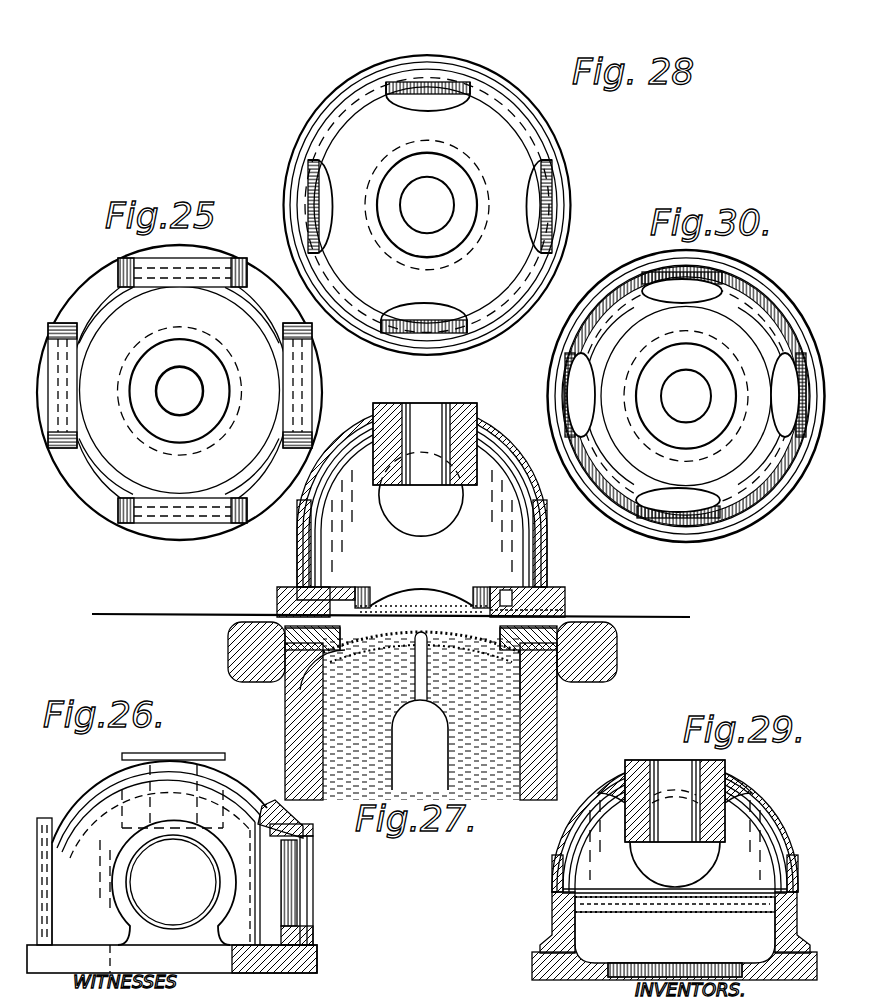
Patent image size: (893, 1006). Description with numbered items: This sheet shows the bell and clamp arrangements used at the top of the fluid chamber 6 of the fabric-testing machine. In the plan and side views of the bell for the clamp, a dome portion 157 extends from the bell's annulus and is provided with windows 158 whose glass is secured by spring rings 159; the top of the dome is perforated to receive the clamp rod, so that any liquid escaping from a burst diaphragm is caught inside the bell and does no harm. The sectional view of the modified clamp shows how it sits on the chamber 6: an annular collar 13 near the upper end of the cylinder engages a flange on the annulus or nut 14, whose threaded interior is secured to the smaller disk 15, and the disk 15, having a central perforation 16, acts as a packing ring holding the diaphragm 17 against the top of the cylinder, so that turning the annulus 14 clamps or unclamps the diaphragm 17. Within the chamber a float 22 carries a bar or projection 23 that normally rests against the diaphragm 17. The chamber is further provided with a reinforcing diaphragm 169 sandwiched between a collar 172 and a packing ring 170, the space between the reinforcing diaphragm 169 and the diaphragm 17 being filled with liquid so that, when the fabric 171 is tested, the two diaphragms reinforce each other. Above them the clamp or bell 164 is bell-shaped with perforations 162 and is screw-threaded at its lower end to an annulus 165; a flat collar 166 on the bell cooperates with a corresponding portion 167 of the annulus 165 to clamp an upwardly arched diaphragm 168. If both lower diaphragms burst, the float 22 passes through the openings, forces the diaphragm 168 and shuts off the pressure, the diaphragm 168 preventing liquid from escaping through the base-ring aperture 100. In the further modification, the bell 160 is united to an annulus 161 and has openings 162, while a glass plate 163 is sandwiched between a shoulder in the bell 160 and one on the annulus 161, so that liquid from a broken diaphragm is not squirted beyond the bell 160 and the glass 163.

In FIG. 27, the fluid chamber 6 is at (560, 746).
In FIG. 27, the annular collar 13 is at (293, 666).
In FIG. 27, the annulus or nut 14 is at (227, 651).
In FIG. 27, the disk 15 is at (275, 610).
In FIG. 27, the central perforation 16 is at (481, 604).
In FIG. 27, the diaphragm 17 is at (359, 600).
In FIG. 27, the float 22 is at (420, 745).
In FIG. 27, the bar or projection 23 is at (420, 703).
In FIG. 27, the base-ring aperture 100 is at (389, 612).
In FIG. 29, the base-ring aperture 100 is at (618, 962).
In FIG. 26, the dome portion 157 is at (88, 791).
In FIG. 26, the windows 158 is at (314, 860).
In FIG. 26, the spring rings 159 is at (298, 900).
In FIG. 29, the bell 160 is at (597, 787).
In FIG. 29, the annulus 161 is at (548, 981).
In FIG. 27, the perforations or openings 162 is at (538, 470).
In FIG. 29, the perforations or openings 162 is at (782, 814).
In FIG. 29, the glass plate 163 is at (667, 916).
In FIG. 27, the clamp or bell 164 is at (354, 430).
In FIG. 27, the annulus 165 is at (562, 591).
In FIG. 27, the flat collar 166 is at (509, 608).
In FIG. 27, the corresponding portion 167 is at (566, 612).
In FIG. 27, the diaphragm 168 is at (421, 592).
In FIG. 27, the reinforcing diaphragm 169 is at (334, 658).
In FIG. 27, the packing ring 170 is at (304, 681).
In FIG. 27, the fabric 171 is at (651, 614).
In FIG. 27, the collar 172 is at (537, 682).